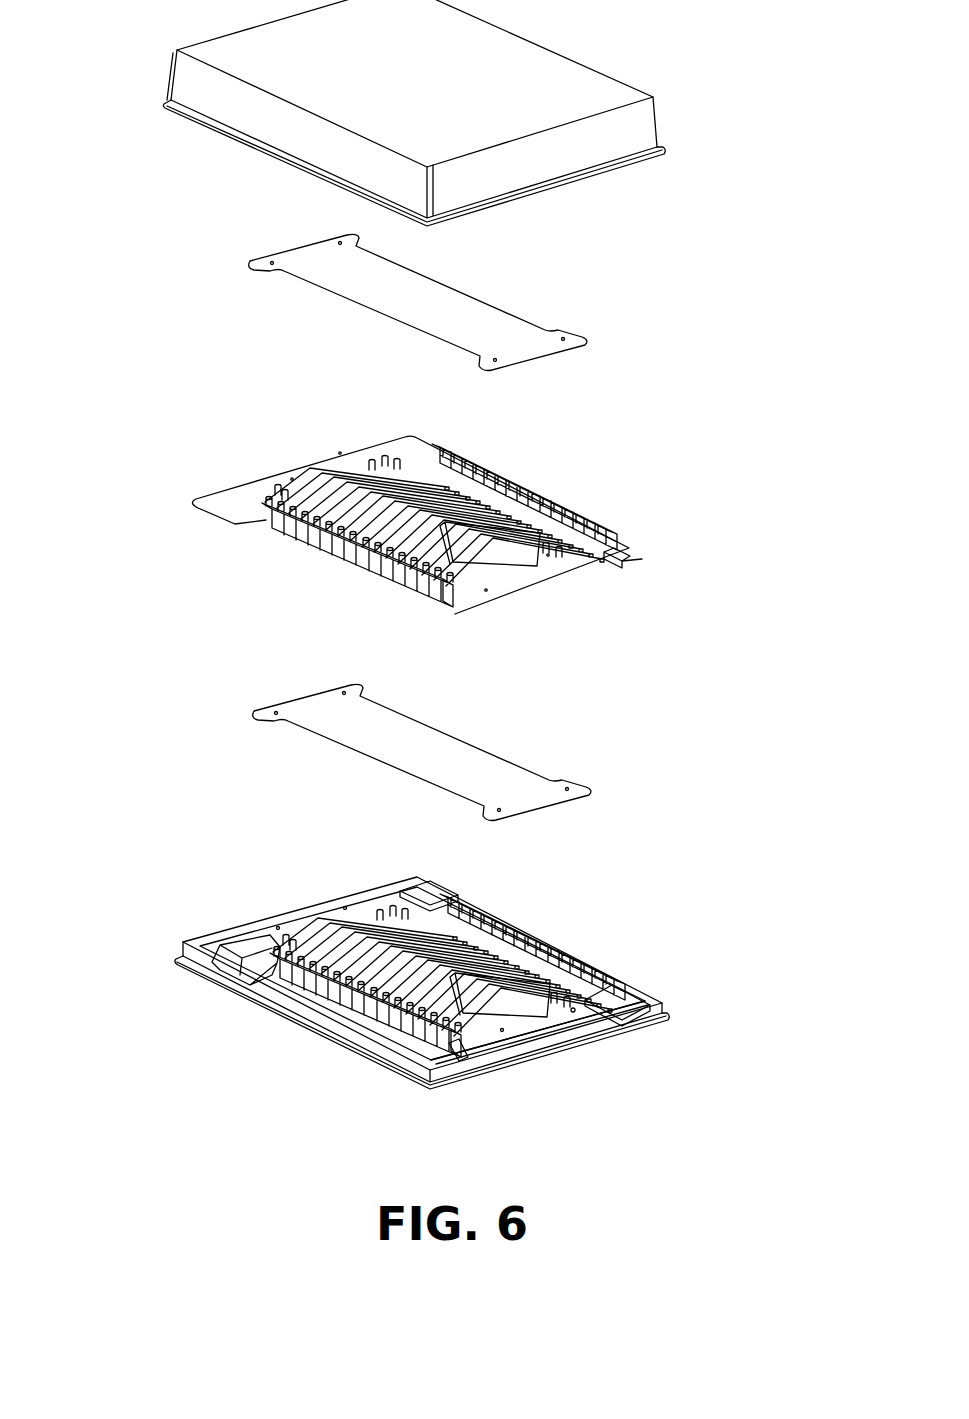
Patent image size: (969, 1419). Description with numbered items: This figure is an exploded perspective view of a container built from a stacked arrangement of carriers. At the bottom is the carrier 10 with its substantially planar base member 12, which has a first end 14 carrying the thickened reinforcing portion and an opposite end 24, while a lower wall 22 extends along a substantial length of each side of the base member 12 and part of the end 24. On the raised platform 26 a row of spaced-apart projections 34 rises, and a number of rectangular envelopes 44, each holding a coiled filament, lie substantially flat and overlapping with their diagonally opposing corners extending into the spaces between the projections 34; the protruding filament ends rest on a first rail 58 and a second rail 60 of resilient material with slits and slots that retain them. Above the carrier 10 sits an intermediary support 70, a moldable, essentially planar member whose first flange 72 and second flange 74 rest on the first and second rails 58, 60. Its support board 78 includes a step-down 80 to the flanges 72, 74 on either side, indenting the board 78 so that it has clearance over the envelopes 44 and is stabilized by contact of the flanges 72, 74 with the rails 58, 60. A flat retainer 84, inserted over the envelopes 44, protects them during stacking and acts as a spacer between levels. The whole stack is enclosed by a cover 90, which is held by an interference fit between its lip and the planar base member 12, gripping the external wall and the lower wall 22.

The carrier 10 is at (416, 1003).
The planar base member 12 is at (675, 993).
The first end 14 is at (157, 938).
The wall 22 is at (490, 1065).
The end 24 is at (427, 1095).
The raised platform 26 is at (573, 1013).
The projections 34 is at (412, 975).
The envelopes 44 is at (497, 995).
The first rail 58 is at (455, 1047).
The second rail 60 is at (615, 1000).
The intermediary support 70 is at (474, 537).
The first flange 72 is at (463, 607).
The second flange 74 is at (617, 562).
The support board 78 is at (483, 585).
The step-down 80 is at (603, 560).
The flat retainer 84 is at (589, 308).
The cover 90 is at (507, 88).